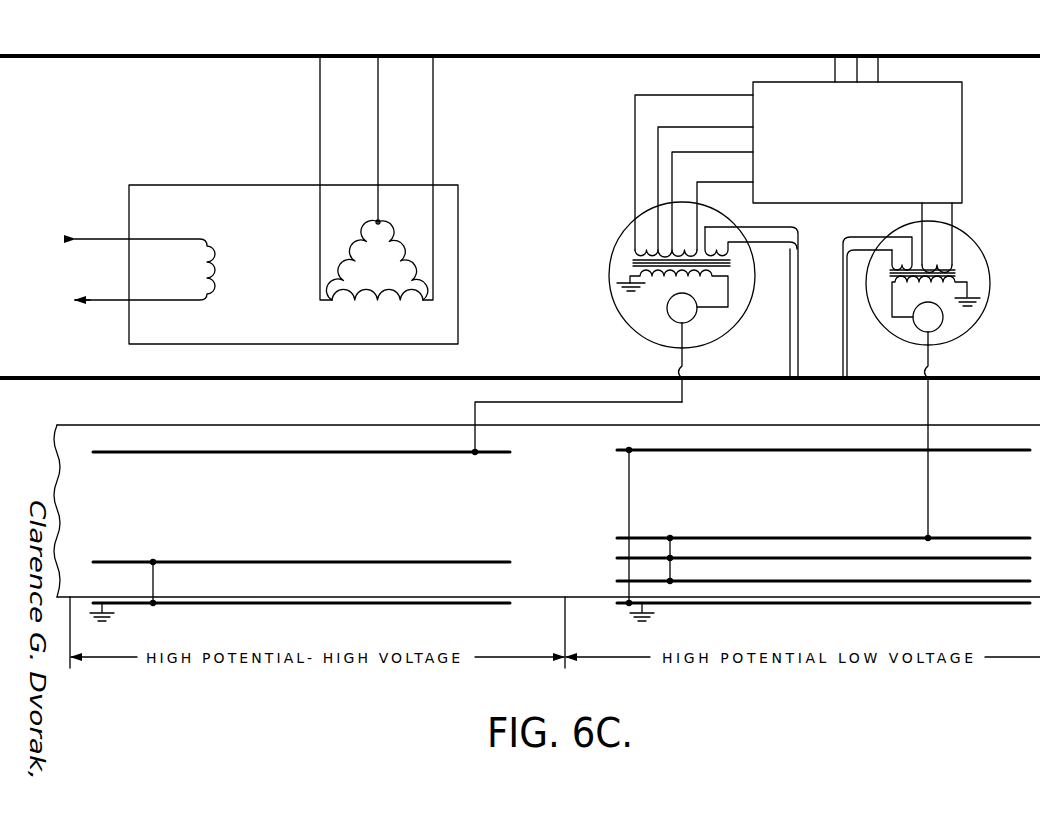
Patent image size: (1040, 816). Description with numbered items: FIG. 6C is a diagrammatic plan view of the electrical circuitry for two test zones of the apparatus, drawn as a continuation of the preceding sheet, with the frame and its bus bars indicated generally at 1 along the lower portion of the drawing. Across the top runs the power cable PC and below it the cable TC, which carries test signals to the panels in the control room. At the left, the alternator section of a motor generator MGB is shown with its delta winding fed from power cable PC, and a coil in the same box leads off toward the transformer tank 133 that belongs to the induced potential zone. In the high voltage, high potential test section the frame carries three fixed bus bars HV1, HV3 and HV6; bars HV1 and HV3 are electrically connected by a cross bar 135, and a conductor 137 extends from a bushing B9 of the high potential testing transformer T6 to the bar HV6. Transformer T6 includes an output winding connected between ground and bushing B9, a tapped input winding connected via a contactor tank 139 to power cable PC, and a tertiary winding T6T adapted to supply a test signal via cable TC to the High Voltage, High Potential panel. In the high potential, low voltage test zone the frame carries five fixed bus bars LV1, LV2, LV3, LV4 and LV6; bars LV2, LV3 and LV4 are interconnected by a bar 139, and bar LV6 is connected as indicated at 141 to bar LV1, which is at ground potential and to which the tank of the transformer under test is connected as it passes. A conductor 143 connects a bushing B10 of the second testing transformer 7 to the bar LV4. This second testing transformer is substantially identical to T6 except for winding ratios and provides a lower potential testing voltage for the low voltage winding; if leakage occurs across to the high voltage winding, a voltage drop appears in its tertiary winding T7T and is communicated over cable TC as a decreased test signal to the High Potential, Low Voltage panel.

The switchgear / distribution unit 1 is at (77, 426).
The transformer T7 7 is at (985, 318).
The transformer tank 133 is at (145, 269).
The cross bar 135 is at (151, 582).
The conductor 137 is at (548, 403).
The contactor tank 139 is at (814, 205).
The connection 141 is at (628, 509).
The conductor 143 is at (930, 481).
The power cable PC is at (191, 58).
The cable TC is at (172, 382).
The motor generator MGB is at (228, 185).
The high potential testing transformer T6 is at (612, 312).
The tertiary winding T6T is at (737, 250).
The tertiary winding T7T is at (897, 257).
The bushing B9 is at (690, 319).
The bushing B10 is at (918, 329).
The fixed bus bar HV6 is at (176, 457).
The fixed bus bar HV3 is at (194, 561).
The fixed bus bar HV1 is at (190, 602).
The fixed bus bar LV6 is at (697, 453).
The fixed bus bar LV4 is at (712, 536).
The fixed bus bar LV3 is at (704, 556).
The fixed bus bar LV2 is at (696, 579).
The fixed bus bar LV1 is at (697, 606).